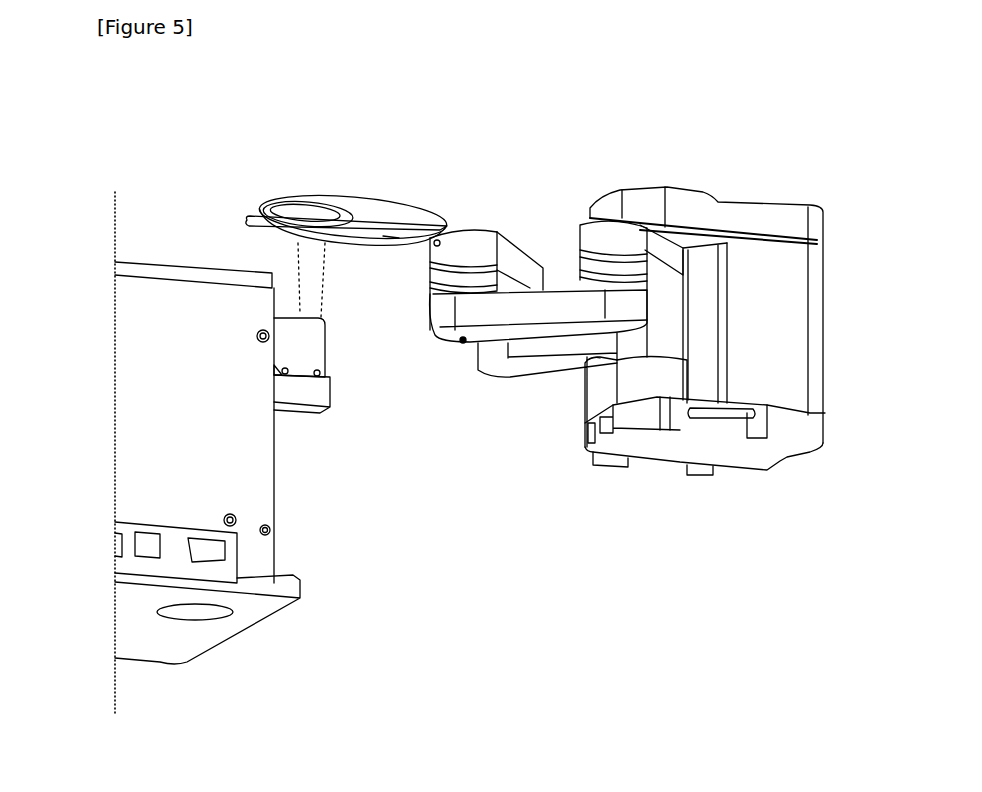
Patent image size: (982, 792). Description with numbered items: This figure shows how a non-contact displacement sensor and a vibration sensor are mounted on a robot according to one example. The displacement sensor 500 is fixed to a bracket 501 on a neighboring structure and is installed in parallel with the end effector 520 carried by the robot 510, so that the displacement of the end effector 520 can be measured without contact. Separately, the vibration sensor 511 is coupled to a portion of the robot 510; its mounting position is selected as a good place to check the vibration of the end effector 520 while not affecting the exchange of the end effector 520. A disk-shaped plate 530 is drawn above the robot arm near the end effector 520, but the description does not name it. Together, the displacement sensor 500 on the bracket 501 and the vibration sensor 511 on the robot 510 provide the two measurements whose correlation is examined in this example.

The displacement sensor 500 is at (335, 358).
The bracket 501 is at (303, 418).
The robot 510 is at (677, 170).
The vibration sensor 511 is at (440, 247).
The end effector 520 is at (391, 233).
The disk plate 530 is at (380, 195).